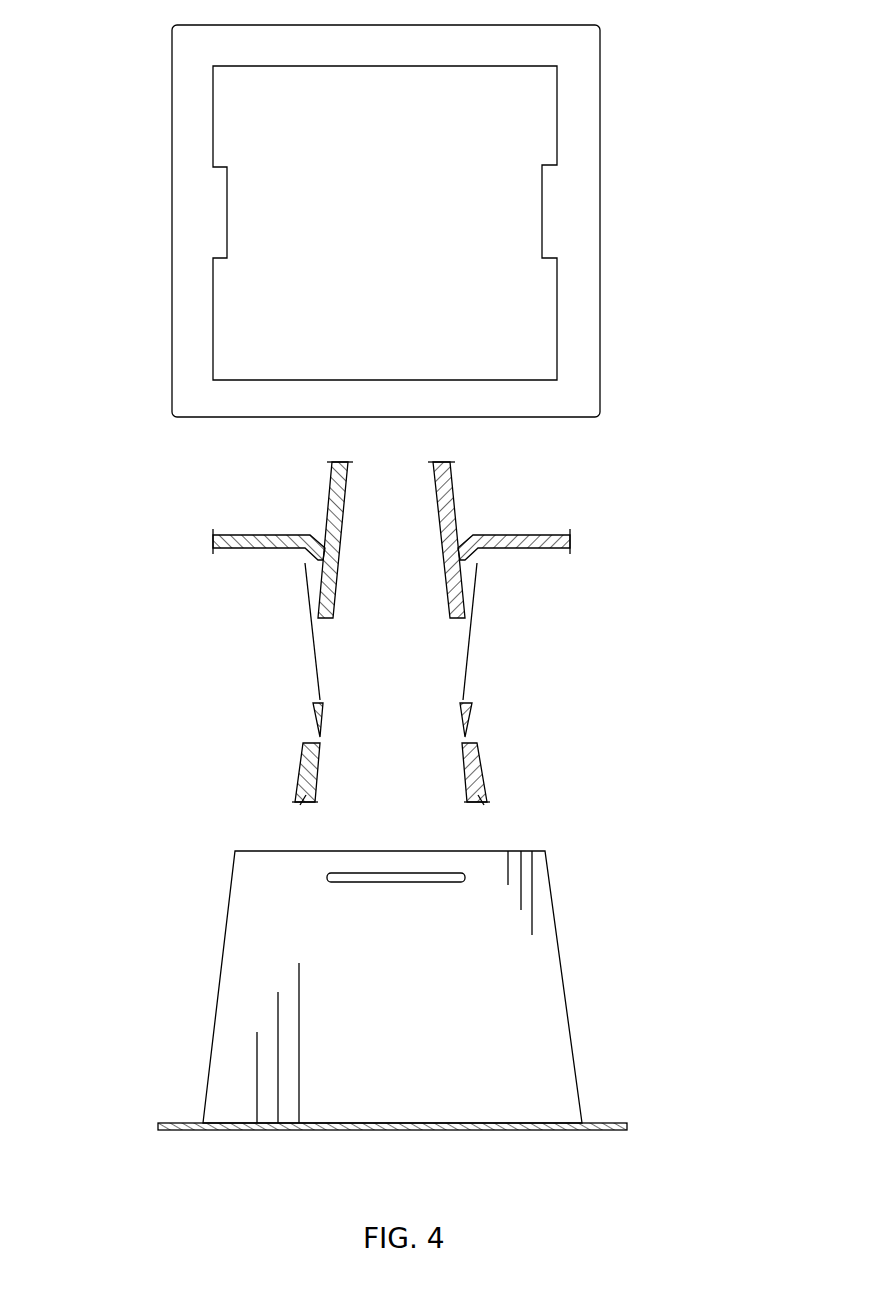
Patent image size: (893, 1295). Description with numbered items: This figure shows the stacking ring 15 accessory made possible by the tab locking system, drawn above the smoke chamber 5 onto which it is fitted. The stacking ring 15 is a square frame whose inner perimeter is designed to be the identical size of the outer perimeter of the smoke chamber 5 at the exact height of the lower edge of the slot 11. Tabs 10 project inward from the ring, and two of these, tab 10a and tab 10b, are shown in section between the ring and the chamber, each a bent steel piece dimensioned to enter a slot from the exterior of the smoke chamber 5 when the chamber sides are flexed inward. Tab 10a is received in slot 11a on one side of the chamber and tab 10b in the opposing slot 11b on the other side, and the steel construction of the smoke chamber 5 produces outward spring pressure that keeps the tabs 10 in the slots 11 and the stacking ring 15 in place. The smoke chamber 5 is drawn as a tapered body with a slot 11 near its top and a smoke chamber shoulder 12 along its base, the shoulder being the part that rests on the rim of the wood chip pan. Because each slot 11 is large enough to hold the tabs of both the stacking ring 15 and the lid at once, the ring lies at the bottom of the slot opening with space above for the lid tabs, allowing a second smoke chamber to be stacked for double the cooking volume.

The stacking ring 15 is at (604, 236).
The tabs 10 is at (538, 213).
The tab 10a is at (188, 537).
The tab 10b is at (592, 538).
The slot 11a is at (281, 666).
The slot 11b is at (500, 663).
The smoke chamber 5 is at (565, 968).
The slot 11 is at (394, 888).
The smoke chamber shoulder 12 is at (630, 1118).